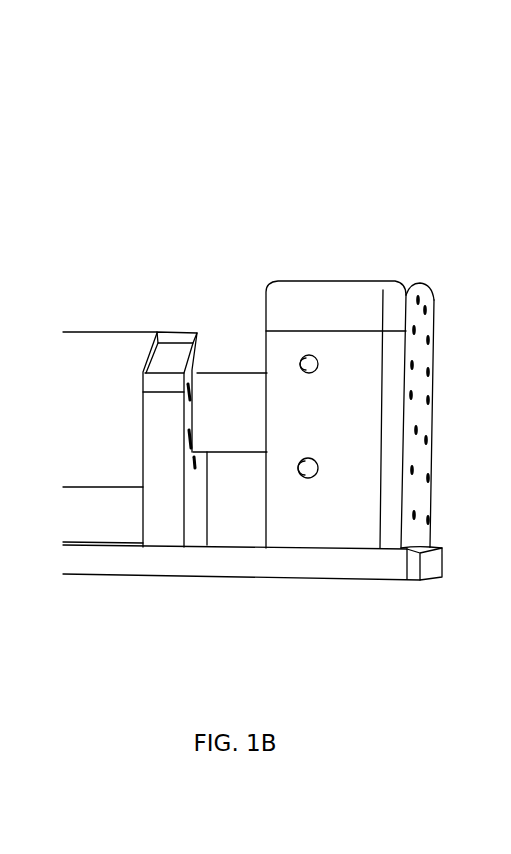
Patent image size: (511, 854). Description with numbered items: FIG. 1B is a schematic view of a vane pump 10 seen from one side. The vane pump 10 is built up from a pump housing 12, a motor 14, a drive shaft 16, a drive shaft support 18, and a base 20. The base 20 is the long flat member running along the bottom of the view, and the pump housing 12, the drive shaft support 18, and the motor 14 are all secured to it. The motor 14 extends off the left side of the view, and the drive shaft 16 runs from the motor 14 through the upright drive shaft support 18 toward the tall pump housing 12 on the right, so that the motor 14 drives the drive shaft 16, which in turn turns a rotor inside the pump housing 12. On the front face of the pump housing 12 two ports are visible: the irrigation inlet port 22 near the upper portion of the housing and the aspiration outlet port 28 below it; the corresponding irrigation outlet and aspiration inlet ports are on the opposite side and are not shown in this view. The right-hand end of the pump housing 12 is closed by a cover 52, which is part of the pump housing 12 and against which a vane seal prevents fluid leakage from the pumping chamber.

The vane pump 10 is at (385, 127).
The pump housing 12 is at (336, 360).
The motor 14 is at (98, 331).
The drive shaft 16 is at (231, 373).
The drive shaft support 18 is at (174, 330).
The base 20 is at (172, 578).
The irrigation inlet port 22 is at (311, 374).
The aspiration outlet port 28 is at (312, 478).
The cover 52 is at (428, 330).